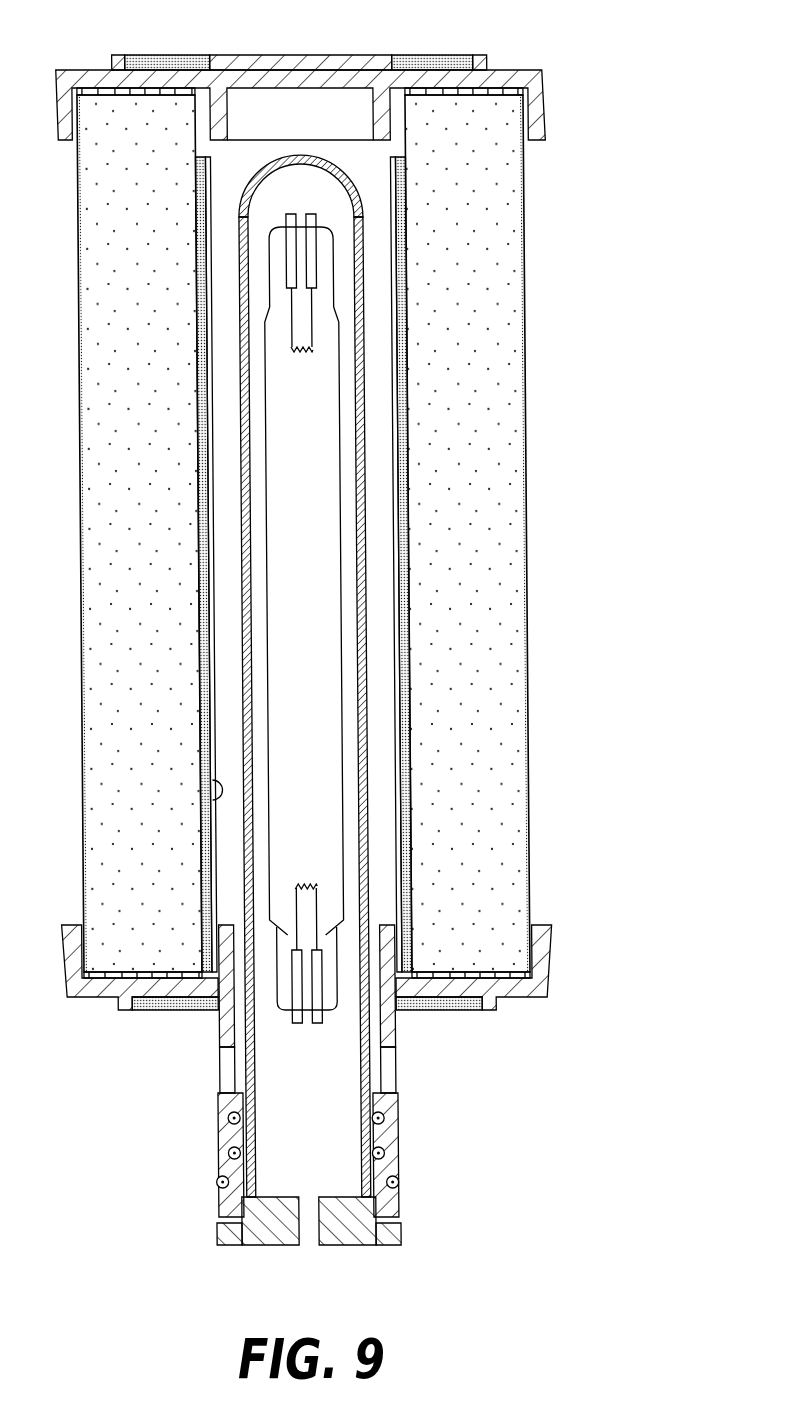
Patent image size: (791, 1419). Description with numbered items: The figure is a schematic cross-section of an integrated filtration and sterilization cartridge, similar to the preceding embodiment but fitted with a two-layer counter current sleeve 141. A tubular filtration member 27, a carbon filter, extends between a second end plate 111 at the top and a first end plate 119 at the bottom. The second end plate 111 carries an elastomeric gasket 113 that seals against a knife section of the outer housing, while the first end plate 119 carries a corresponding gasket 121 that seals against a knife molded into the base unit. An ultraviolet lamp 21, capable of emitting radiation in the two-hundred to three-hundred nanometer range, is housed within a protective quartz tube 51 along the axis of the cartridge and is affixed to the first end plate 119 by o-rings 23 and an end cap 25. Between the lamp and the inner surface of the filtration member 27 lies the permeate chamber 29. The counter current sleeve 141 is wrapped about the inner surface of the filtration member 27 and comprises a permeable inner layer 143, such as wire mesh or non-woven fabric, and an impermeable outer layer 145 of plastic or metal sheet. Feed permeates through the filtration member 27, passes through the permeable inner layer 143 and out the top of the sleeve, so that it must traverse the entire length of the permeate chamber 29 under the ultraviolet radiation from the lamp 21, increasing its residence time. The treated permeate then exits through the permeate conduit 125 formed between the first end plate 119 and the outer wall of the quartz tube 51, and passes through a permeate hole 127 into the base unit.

The gasket 113 is at (427, 62).
The second end plate 111 is at (523, 70).
The filtration member 27 is at (500, 314).
The permeate chamber 29 is at (368, 176).
The protective quartz tube 51 is at (363, 381).
The ultraviolet lamp 21 is at (338, 470).
The counter current sleeve 141 is at (186, 639).
The permeable inner layer 143 is at (200, 728).
The impermeable outer layer 145 is at (206, 797).
The permeate conduit 125 is at (229, 928).
The first end plate 119 is at (84, 998).
The gasket 121 is at (181, 1012).
The permeate hole 127 is at (218, 1076).
The o-rings 23 is at (204, 1152).
The end cap 25 is at (238, 1245).